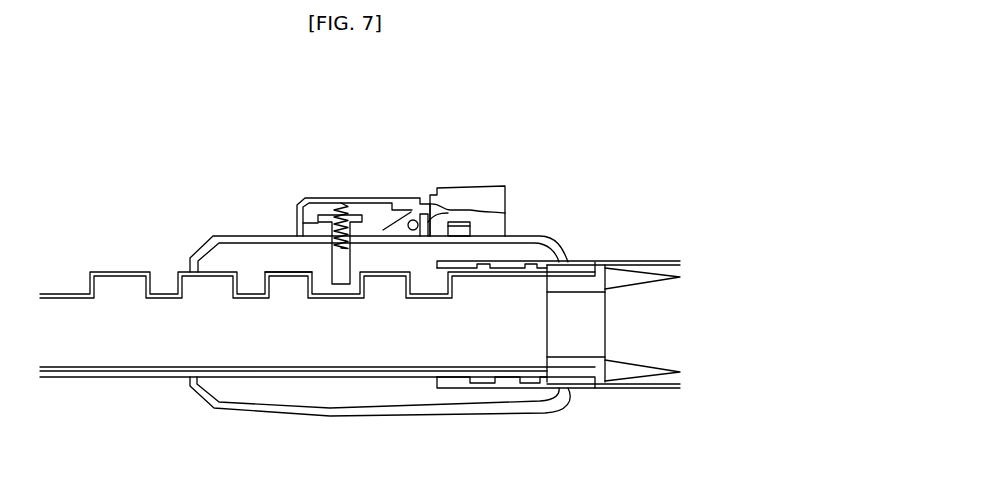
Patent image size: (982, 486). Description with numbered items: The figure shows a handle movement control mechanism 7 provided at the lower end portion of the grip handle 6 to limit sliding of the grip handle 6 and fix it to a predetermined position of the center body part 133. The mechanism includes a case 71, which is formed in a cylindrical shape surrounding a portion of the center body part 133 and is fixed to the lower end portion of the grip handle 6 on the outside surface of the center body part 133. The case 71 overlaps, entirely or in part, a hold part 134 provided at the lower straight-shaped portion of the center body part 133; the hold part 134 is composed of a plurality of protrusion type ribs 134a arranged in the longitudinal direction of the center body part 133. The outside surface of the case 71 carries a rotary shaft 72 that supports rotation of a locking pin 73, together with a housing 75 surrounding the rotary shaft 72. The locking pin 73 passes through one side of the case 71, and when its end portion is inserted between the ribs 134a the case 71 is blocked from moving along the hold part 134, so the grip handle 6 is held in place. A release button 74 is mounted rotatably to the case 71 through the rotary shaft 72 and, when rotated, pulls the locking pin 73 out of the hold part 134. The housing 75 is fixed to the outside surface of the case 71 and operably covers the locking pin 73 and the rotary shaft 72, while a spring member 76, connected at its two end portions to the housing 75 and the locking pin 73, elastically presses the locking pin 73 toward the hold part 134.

The handle movement control mechanism 7 is at (517, 180).
The grip handle 6 is at (600, 387).
The case 71 is at (547, 240).
The rotary shaft 72 is at (404, 212).
The locking pin 73 is at (336, 278).
The release button 74 is at (479, 186).
The housing 75 is at (312, 198).
The spring member 76 is at (340, 206).
The center body part 133 is at (105, 378).
The hold part 134 is at (135, 262).
The protrusion type ribs 134a is at (270, 274).